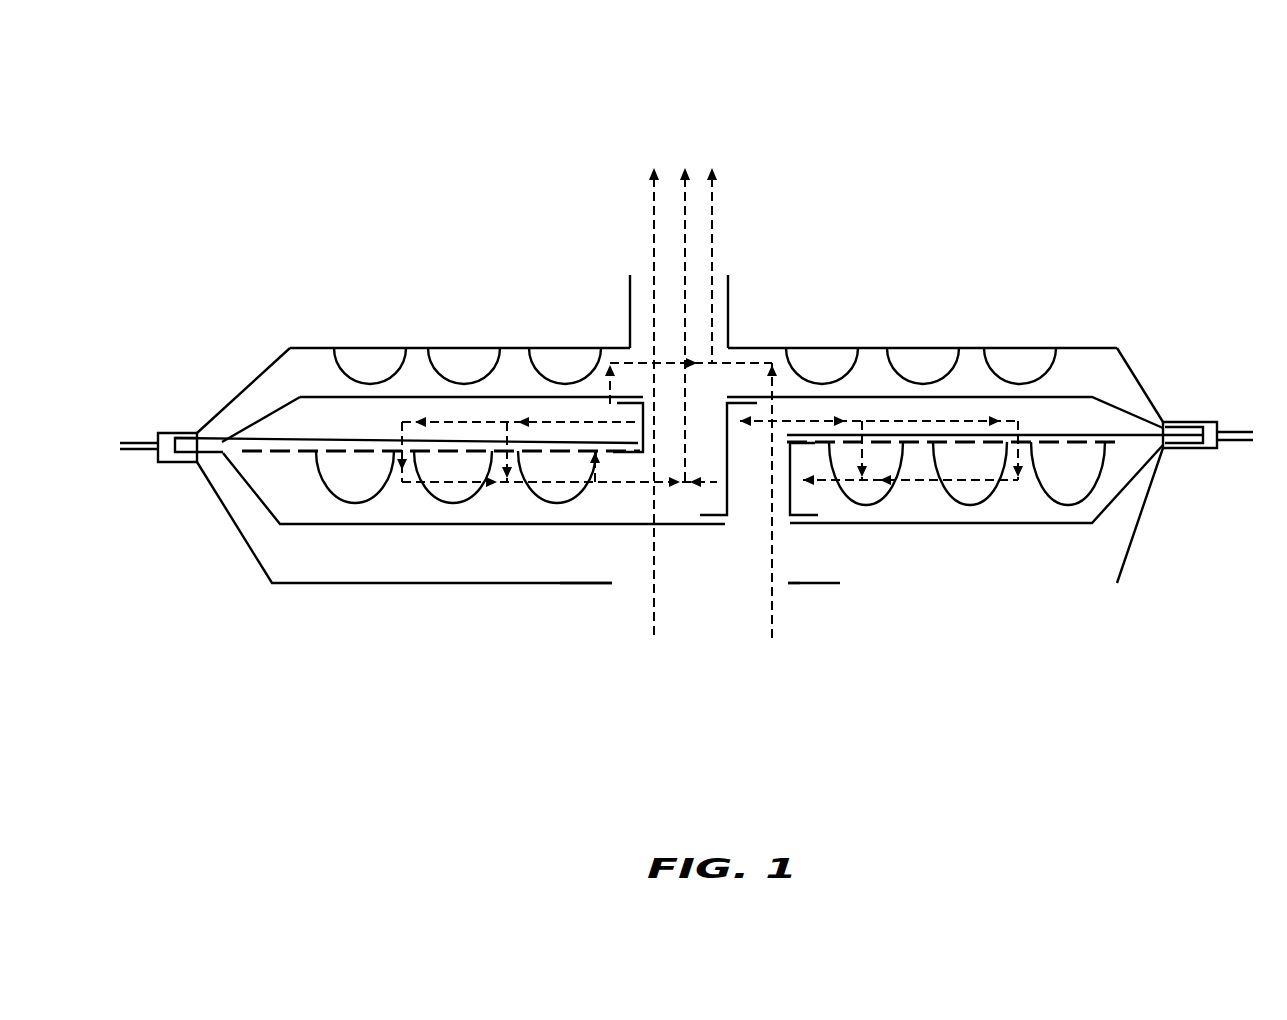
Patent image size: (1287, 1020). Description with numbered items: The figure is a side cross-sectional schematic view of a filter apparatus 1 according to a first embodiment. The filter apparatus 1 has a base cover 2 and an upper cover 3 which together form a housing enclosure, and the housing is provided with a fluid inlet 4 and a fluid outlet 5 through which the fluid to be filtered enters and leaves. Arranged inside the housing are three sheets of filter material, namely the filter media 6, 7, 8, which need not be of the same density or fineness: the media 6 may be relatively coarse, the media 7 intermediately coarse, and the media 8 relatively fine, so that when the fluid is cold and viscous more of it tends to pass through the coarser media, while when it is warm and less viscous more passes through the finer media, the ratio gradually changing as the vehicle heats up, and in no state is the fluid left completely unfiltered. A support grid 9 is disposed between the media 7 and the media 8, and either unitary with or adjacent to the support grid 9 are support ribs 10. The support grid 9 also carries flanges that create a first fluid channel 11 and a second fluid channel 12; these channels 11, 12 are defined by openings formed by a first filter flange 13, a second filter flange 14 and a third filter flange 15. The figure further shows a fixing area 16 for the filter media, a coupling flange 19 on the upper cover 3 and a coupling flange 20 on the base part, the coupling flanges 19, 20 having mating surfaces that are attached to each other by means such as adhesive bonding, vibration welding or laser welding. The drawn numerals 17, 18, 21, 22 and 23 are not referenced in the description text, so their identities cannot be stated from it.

The filter apparatus 1 is at (654, 350).
The base cover 2 is at (237, 530).
The upper cover 3 is at (1137, 373).
The fluid inlet 4 is at (690, 633).
The fluid outlet 5 is at (728, 258).
The filter media 6 is at (322, 525).
The filter media 7 is at (272, 447).
The filter media 8 is at (306, 398).
The support grid 9 is at (275, 451).
The support ribs 10 is at (357, 502).
The first fluid channel 11 is at (748, 540).
The second fluid channel 12 is at (713, 403).
The first filter flange 13 is at (817, 513).
The second filter flange 14 is at (733, 503).
The third filter flange 15 is at (621, 412).
The fixing area 16 is at (182, 432).
The upper baffle cups 17 is at (1020, 353).
The outlet connector 18 is at (1233, 443).
The coupling flange 19 is at (1240, 447).
The coupling flange 20 is at (652, 215).
The second exhaust flow 21 is at (683, 180).
The third exhaust flow 22 is at (713, 197).
The jacket space 23 is at (453, 563).